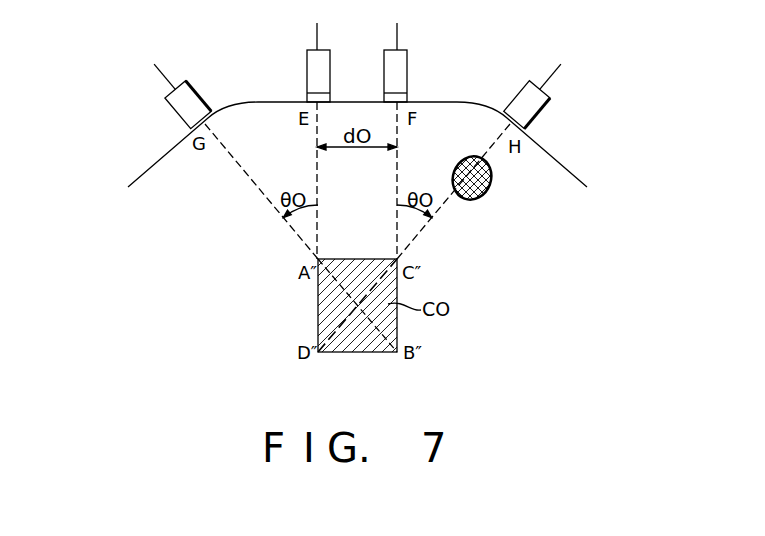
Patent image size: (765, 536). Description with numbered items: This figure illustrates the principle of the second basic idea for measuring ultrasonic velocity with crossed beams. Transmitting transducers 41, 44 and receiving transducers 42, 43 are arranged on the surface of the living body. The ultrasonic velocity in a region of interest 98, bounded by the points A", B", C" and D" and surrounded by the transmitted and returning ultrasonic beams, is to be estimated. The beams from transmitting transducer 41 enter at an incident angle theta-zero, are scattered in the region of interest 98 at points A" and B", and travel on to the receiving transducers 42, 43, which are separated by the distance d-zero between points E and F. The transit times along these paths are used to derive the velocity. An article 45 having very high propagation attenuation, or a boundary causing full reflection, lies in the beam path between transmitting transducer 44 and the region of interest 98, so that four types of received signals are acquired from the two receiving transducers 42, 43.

The transmitting transducer 41 is at (188, 95).
The receiving transducer 42 is at (318, 67).
The receiving transducer 43 is at (400, 62).
The transmitting transducer 44 is at (529, 102).
The article 45 is at (484, 198).
The region of interest 98 is at (320, 308).